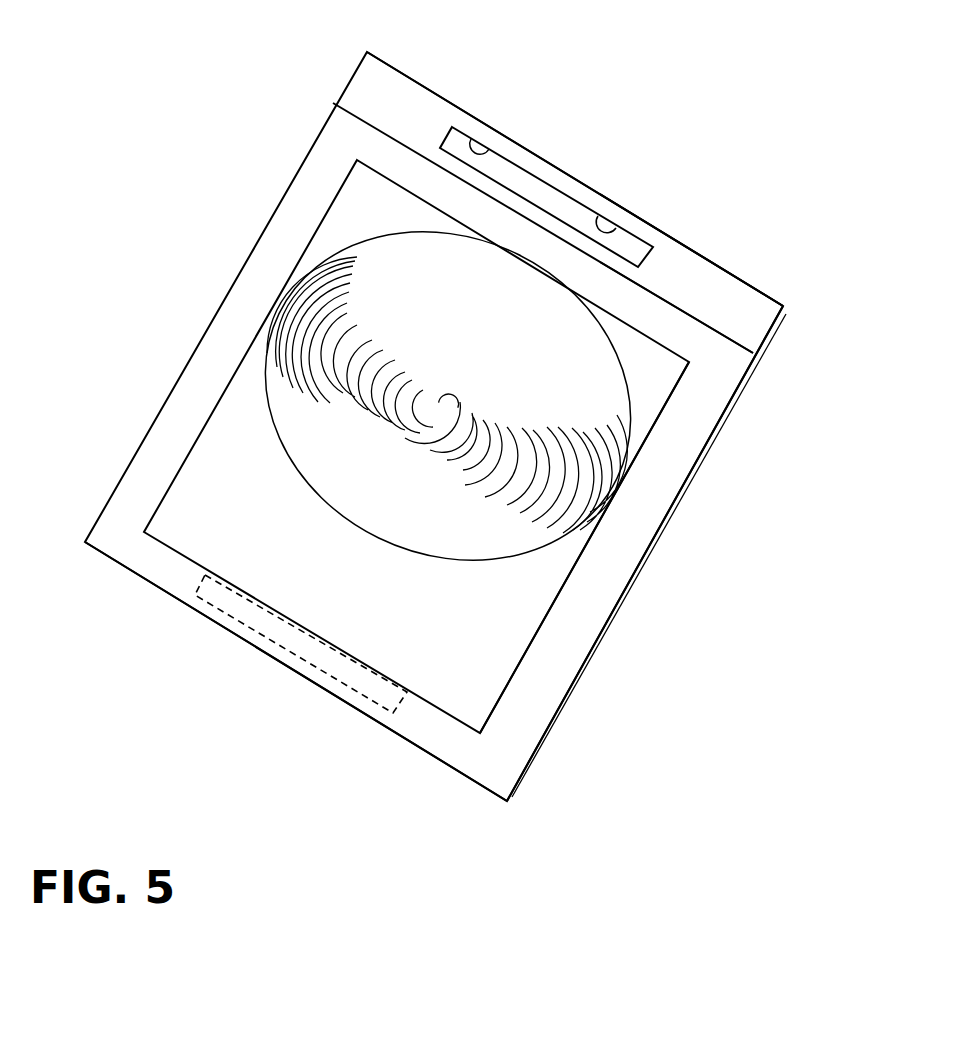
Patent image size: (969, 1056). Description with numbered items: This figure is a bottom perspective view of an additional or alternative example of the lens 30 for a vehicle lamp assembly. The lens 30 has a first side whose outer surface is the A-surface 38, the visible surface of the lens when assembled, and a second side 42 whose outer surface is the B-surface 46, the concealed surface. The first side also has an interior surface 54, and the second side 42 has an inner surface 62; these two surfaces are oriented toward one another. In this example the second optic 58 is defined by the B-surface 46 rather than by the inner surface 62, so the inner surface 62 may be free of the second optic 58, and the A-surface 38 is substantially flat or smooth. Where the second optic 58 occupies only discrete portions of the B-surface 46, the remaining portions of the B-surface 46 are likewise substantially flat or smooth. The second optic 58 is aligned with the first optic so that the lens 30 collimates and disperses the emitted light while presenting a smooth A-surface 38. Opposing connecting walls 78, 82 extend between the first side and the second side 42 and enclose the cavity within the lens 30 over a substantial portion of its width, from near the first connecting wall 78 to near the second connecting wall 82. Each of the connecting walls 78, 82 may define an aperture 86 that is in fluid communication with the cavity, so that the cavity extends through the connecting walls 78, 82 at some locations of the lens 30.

The lens 30 is at (301, 163).
The A-surface 38 is at (437, 95).
The second side 42 is at (546, 672).
The B-surface 46 is at (600, 580).
The interior surface 54 is at (490, 148).
The second optic 58 is at (612, 450).
The inner surface 62 is at (533, 202).
The first connecting wall 78 is at (417, 742).
The second connecting wall 82 is at (715, 280).
The aperture 86 is at (620, 230).